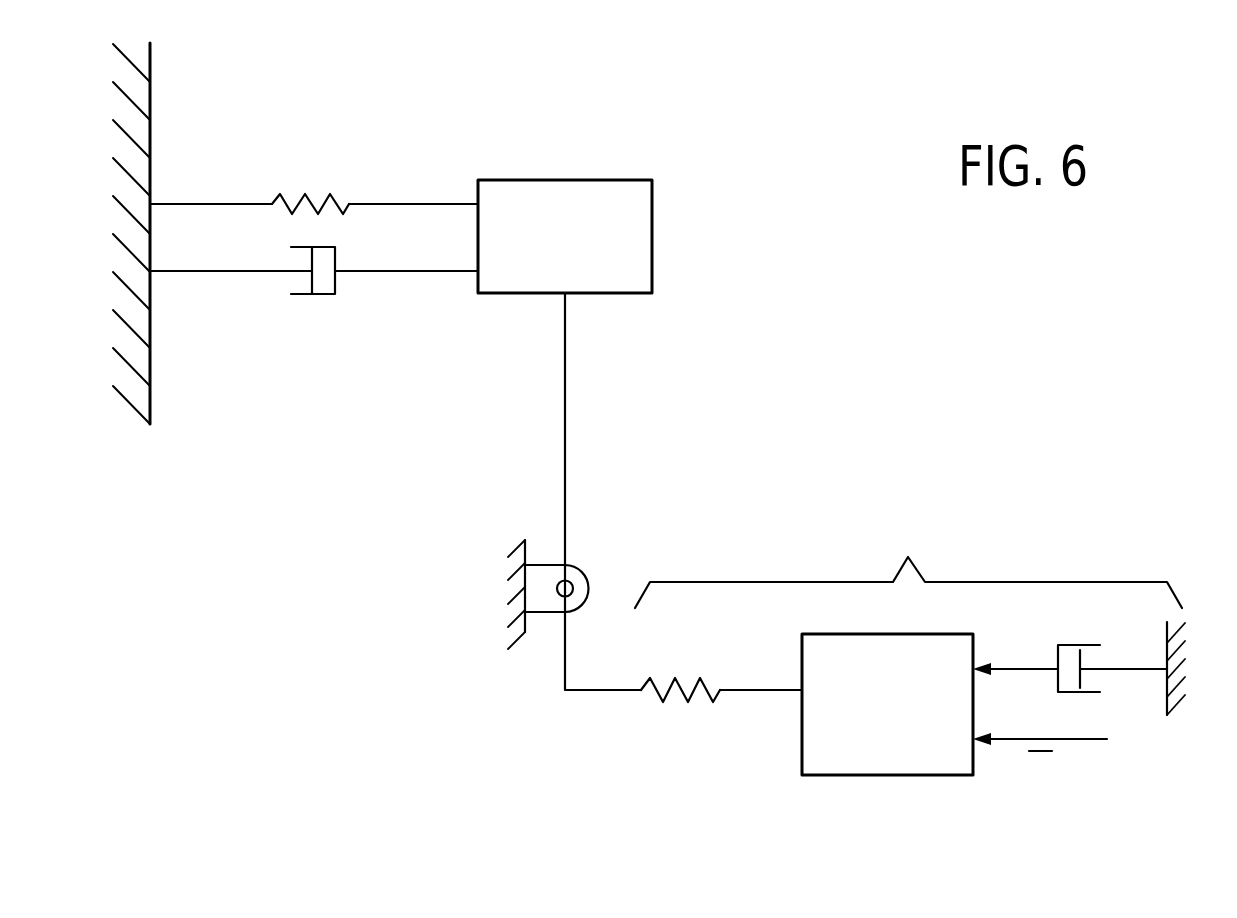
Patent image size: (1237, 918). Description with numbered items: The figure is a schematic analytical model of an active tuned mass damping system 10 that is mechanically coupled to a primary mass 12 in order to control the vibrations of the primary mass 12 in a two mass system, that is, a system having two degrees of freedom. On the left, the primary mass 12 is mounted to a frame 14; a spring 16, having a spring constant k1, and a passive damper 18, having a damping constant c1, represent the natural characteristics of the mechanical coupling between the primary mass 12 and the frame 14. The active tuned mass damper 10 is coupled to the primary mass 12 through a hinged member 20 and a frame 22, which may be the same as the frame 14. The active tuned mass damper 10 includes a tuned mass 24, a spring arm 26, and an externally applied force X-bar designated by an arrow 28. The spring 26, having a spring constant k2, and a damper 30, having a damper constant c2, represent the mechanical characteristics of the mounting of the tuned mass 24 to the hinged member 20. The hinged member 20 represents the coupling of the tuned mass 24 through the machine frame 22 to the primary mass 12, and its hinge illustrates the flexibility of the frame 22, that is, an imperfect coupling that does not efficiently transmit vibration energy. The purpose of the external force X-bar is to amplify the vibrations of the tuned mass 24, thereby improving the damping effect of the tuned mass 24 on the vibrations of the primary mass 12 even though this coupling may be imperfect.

The active tuned mass damping system 10 is at (908, 556).
The primary mass 12 is at (522, 180).
The frame 14 is at (150, 140).
The spring 16 is at (346, 204).
The passive damper 18 is at (335, 283).
The hinged member 20 is at (565, 443).
The frame 22 is at (545, 612).
The tuned mass 24 is at (887, 775).
The spring arm 26 is at (680, 700).
The arrow designating externally applied force 28 is at (1075, 740).
The damper 30 is at (1085, 693).